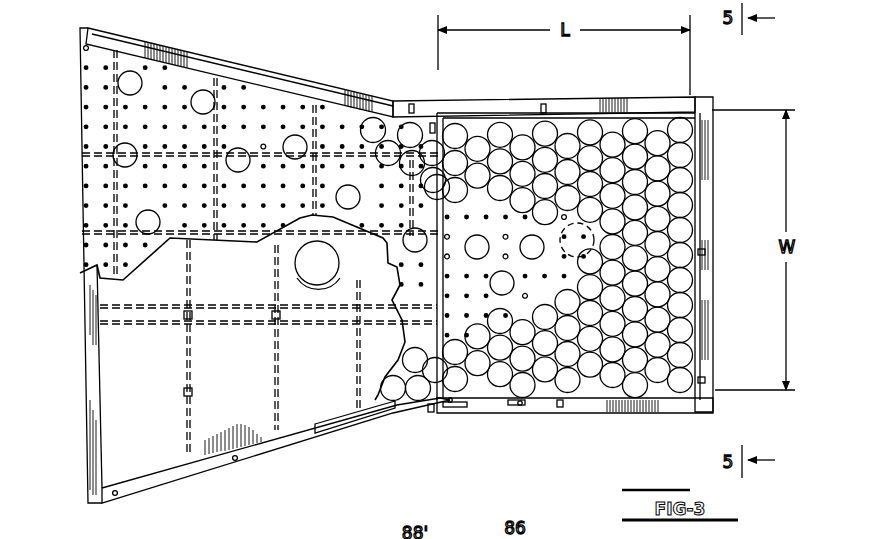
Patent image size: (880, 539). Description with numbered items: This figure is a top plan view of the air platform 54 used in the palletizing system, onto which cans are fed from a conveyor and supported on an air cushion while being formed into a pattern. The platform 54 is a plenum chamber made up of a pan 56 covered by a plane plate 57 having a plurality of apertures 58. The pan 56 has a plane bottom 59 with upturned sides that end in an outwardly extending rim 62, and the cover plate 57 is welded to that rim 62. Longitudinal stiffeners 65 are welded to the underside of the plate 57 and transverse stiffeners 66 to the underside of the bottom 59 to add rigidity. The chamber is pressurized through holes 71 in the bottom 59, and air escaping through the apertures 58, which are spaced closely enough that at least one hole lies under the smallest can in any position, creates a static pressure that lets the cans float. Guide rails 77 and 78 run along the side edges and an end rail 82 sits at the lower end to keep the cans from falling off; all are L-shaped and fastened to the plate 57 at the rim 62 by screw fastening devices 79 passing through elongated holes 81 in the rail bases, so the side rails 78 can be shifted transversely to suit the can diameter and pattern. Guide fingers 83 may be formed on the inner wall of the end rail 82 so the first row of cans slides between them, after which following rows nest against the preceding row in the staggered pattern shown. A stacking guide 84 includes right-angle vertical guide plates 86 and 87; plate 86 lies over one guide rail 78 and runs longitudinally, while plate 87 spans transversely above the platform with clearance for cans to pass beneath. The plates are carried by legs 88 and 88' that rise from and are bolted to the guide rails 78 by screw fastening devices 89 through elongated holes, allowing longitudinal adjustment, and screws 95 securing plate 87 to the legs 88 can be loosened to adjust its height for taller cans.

The air platform 54 is at (333, 498).
The pan 56 is at (167, 487).
The plane plate 57 is at (118, 285).
The apertures 58 is at (302, 102).
The plane bottom 59 is at (125, 456).
The outwardly extending rim 62 is at (215, 465).
The longitudinal stiffeners 65 is at (80, 142).
The transverse stiffeners 66 is at (275, 352).
The holes 71 is at (300, 263).
The guide rail 77 is at (345, 418).
The guide rail 78 is at (598, 405).
The screw fastening devices 79 is at (546, 108).
The elongated holes 81 is at (541, 108).
The end rail 82 is at (700, 305).
The guide fingers 83 is at (700, 270).
The stacking guide 84 is at (437, 267).
The guide plate 86 is at (487, 404).
The guide plate 87 is at (437, 322).
The leg 88 is at (564, 434).
The leg 88' is at (434, 268).
The screw fastening devices 89 is at (452, 114).
The screws 95 is at (423, 128).